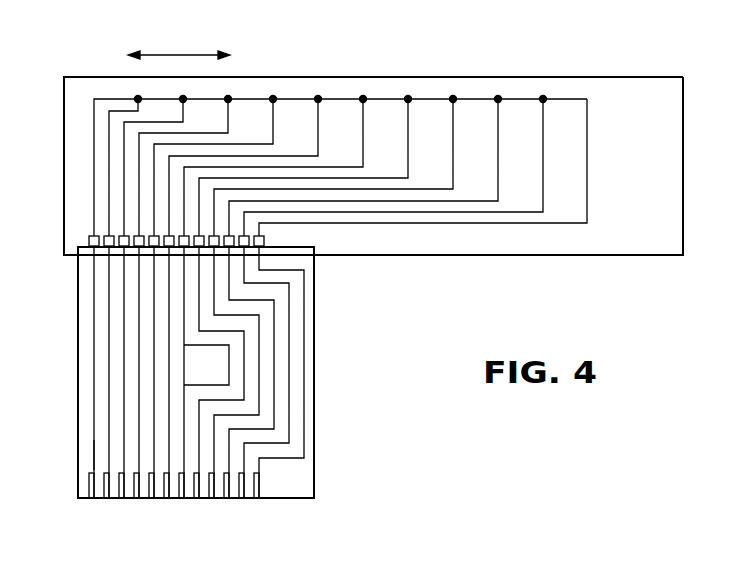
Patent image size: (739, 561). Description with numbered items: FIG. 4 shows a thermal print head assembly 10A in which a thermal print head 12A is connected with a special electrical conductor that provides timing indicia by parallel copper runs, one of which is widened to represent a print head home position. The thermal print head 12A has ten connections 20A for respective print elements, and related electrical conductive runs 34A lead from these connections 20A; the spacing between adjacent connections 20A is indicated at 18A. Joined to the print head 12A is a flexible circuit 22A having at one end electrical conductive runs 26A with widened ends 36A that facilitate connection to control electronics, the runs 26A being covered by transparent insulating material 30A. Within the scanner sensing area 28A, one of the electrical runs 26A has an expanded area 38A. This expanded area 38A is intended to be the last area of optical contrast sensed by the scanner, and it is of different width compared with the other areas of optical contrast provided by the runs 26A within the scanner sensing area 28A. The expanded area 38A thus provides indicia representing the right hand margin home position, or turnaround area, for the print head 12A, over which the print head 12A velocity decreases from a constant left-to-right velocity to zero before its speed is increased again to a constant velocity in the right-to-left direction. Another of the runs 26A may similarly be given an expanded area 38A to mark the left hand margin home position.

The thermal print head assembly 10A is at (332, 66).
The thermal print head 12A is at (635, 256).
The contact spacing 18A is at (179, 44).
The connections 20A is at (543, 99).
The flexible circuit 22A is at (315, 464).
The electrical conductive runs 26A is at (86, 456).
The scanner sensing area 28A is at (76, 340).
The transparent insulating material 30A is at (92, 420).
The electrical conductive runs 34A is at (512, 224).
The widened ends 36A is at (91, 500).
The expanded area 38A is at (220, 370).